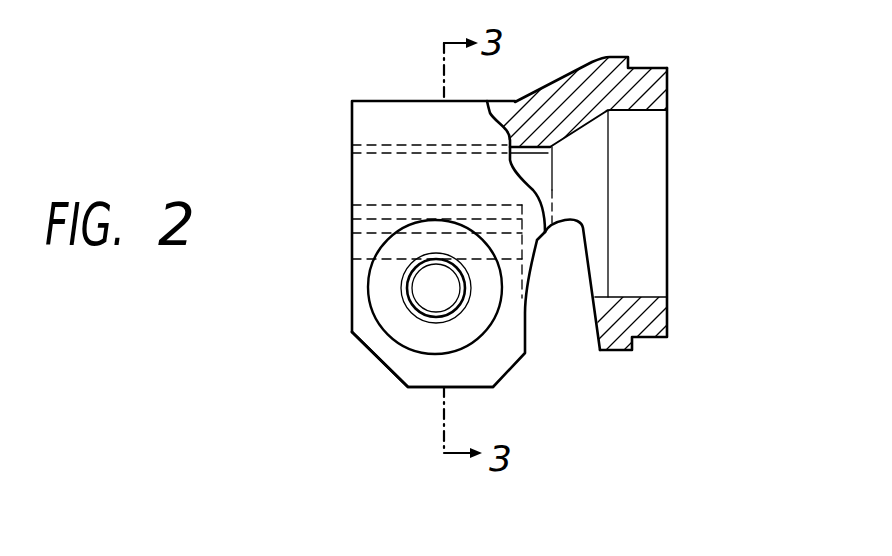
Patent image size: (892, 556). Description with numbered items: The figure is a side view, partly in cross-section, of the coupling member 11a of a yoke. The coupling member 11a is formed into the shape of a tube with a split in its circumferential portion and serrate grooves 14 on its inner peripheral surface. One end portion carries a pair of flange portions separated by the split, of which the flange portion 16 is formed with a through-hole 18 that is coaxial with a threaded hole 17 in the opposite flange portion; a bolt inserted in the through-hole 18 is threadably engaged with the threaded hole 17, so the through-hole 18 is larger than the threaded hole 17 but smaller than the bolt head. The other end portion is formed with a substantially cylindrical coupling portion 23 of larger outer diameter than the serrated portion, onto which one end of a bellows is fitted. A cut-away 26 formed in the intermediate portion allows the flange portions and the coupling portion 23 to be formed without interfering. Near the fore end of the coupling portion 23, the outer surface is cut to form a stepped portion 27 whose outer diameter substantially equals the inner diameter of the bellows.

The coupling member 11a is at (388, 107).
The serrate grooves 14 is at (430, 146).
The flange portion 16 is at (387, 353).
The threaded hole 17 is at (426, 265).
The through-hole 18 is at (417, 297).
The substantially cylindrical coupling portion 23 is at (625, 55).
The cut-away 26 is at (570, 225).
The stepped portion 27 is at (667, 68).